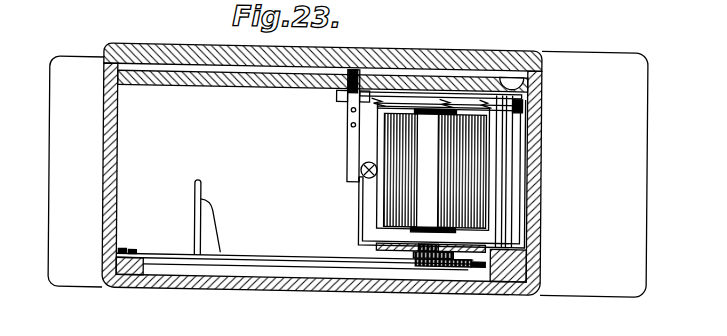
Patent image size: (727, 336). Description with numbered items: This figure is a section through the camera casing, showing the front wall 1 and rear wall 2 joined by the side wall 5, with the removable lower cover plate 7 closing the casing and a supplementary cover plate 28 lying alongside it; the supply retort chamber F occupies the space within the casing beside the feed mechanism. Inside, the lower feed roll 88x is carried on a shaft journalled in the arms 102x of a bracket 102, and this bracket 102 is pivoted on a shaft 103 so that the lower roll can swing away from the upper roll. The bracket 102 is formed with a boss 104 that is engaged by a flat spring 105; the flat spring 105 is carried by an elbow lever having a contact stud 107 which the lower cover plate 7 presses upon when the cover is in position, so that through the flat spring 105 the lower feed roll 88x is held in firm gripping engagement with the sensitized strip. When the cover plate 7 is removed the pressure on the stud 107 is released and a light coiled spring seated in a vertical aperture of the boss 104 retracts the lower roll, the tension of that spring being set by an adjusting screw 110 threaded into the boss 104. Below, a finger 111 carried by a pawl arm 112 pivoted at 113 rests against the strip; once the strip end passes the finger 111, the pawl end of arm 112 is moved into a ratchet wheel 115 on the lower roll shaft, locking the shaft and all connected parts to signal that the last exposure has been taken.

The front wall 1 is at (104, 182).
The supply retort chamber F is at (50, 170).
The rear wall 2 is at (541, 95).
The side wall 5 is at (350, 285).
The lower cover plate 7 is at (434, 46).
The supplementary cover plate 28 is at (205, 86).
The lower feed roll 88x is at (492, 191).
The bracket 102 is at (363, 205).
The arms of bracket 102x is at (493, 31).
The shaft 103 is at (515, 140).
The boss 104 is at (347, 183).
The flat spring 105 is at (348, 160).
The contact stud 107 is at (356, 64).
The adjusting screw 110 is at (358, 152).
The finger 111 is at (196, 210).
The pawl arm 112 is at (281, 253).
The pivot 113 is at (122, 249).
The ratchet wheel 115 is at (460, 263).